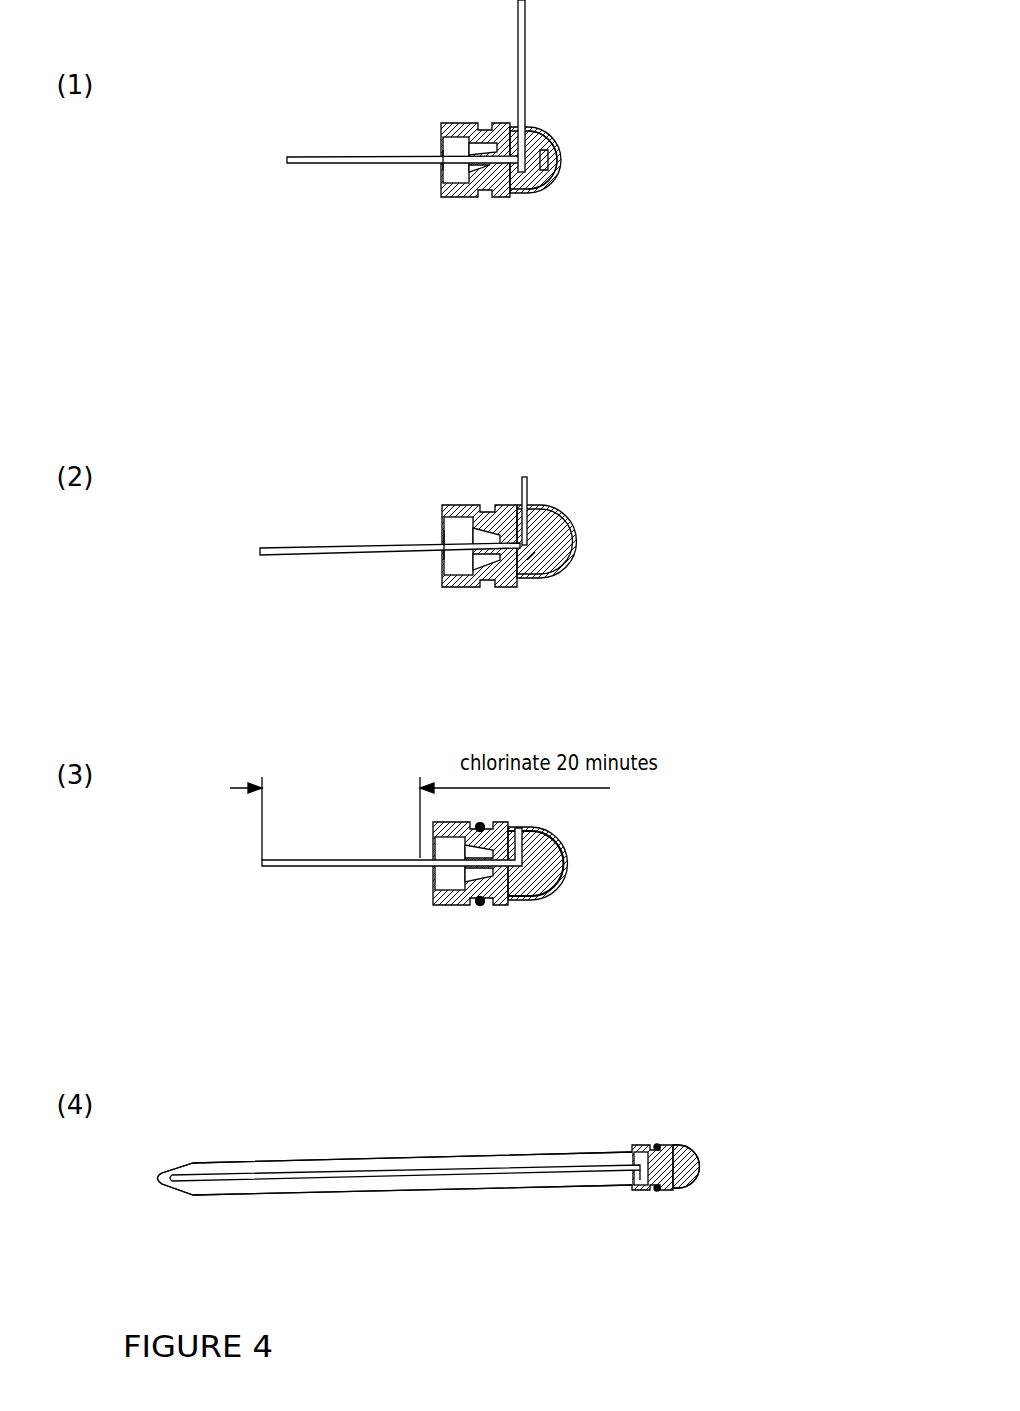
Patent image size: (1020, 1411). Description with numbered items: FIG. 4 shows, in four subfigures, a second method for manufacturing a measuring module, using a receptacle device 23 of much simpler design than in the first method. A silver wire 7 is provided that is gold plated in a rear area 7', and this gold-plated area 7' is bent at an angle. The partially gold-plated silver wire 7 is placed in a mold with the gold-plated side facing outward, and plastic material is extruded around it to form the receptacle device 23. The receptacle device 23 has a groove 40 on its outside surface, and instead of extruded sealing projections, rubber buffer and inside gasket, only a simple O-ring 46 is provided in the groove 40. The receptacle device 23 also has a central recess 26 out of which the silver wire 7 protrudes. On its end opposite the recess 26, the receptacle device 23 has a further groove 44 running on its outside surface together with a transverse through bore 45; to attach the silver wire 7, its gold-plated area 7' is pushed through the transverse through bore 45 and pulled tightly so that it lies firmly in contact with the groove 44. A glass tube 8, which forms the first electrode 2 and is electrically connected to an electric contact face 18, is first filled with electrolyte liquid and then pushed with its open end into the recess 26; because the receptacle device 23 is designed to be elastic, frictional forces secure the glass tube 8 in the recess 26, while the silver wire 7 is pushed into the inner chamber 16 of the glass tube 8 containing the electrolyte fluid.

The first electrode 2 is at (368, 1122).
The silver wire 7 is at (405, 618).
The gold-plated area 7' is at (564, 272).
The glass tube 8 is at (312, 1158).
The inner chamber 16 is at (230, 1170).
The electric contact face 18 is at (567, 863).
The receptacle device 23 is at (543, 168).
The central recess 26 is at (422, 187).
The groove 40 is at (482, 200).
The groove 44 is at (562, 166).
The transverse through bore 45 is at (562, 159).
The O-ring 46 is at (482, 905).